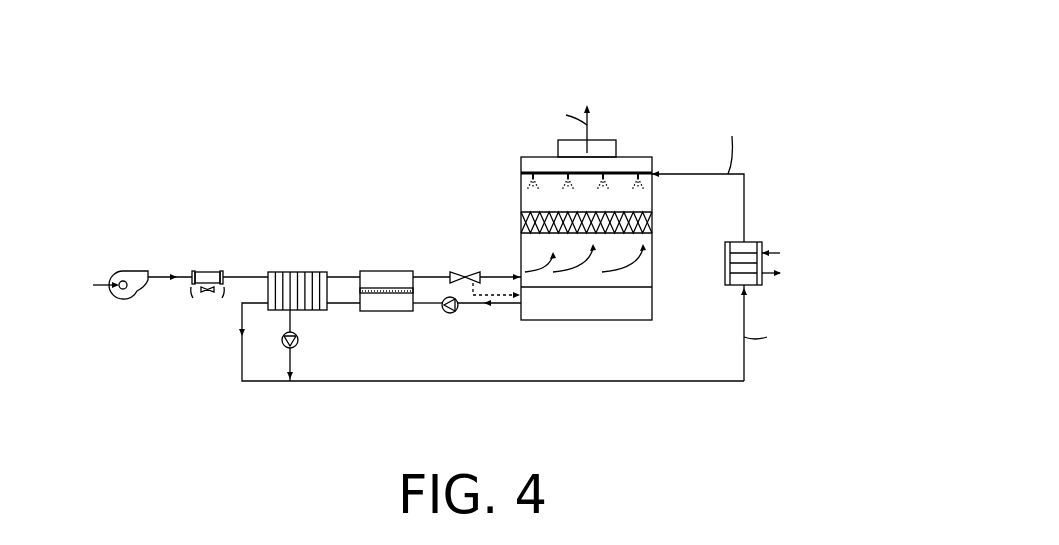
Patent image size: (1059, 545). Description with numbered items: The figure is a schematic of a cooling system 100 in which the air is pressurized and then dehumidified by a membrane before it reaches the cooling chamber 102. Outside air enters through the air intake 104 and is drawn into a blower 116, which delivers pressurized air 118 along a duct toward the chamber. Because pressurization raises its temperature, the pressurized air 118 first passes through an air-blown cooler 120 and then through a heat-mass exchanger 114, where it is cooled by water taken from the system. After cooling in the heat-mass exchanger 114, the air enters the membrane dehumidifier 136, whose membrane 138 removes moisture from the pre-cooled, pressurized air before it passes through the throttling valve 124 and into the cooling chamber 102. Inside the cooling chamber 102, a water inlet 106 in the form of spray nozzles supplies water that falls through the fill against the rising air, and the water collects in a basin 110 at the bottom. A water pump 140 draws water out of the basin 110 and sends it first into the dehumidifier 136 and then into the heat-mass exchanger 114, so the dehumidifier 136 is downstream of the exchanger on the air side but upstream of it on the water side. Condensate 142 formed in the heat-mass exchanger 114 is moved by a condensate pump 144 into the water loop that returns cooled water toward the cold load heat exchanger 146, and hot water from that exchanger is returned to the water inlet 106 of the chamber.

The cooling system 100 is at (551, 68).
The cooling chamber 102 is at (520, 243).
The air intake 104 is at (96, 285).
The water inlet 106 is at (533, 177).
The basin 110 is at (632, 308).
The heat-mass exchanger 114 is at (292, 271).
The blower 116 is at (117, 272).
The pressurized air 118 is at (163, 274).
The air-blown cooler 120 is at (207, 270).
The throttling valve 124 is at (468, 264).
The membrane dehumidifier 136 is at (365, 270).
The membrane 138 is at (390, 288).
The water pump 140 is at (452, 314).
The condensate 142 is at (290, 363).
The condensate pump 144 is at (299, 340).
The cold load heat exchanger 146 is at (755, 242).